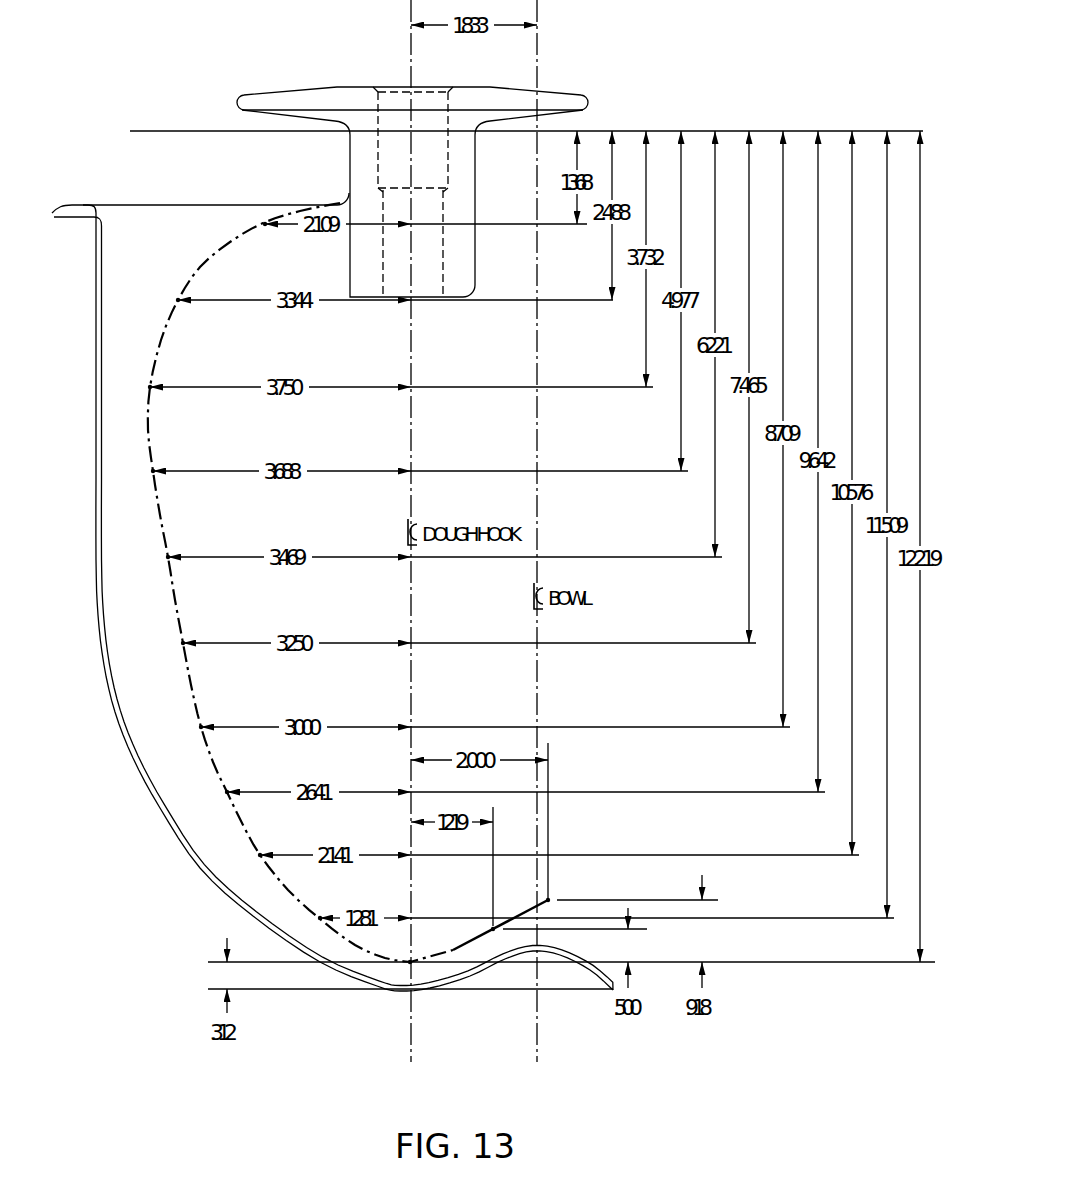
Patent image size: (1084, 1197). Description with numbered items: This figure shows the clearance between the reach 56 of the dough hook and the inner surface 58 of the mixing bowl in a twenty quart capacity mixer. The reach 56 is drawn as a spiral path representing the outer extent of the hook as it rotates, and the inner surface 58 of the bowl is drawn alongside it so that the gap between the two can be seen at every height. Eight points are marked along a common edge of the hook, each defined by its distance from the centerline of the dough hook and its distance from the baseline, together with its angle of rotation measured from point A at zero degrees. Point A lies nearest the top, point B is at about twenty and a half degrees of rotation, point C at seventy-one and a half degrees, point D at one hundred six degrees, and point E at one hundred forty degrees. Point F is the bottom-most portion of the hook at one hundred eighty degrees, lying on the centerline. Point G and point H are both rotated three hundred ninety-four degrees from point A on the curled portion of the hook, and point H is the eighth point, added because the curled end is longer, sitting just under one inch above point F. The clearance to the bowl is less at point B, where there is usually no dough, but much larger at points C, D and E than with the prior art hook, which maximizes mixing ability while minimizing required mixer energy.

The reach of the hook 56 is at (185, 292).
The inner surface of the bowl 58 is at (105, 678).
The point A is at (265, 224).
The point B is at (150, 387).
The point C is at (168, 557).
The point D is at (201, 727).
The point E is at (260, 855).
The point F is at (410, 962).
The point G is at (493, 929).
The point H is at (548, 900).